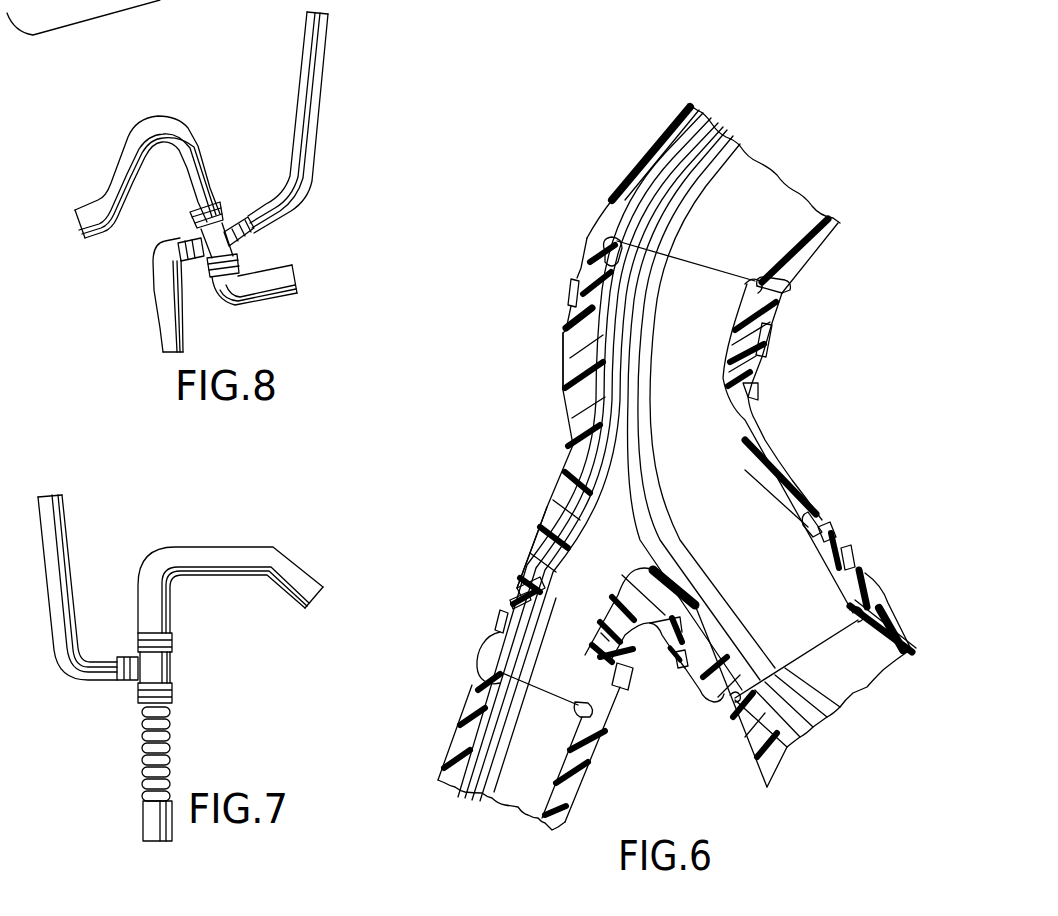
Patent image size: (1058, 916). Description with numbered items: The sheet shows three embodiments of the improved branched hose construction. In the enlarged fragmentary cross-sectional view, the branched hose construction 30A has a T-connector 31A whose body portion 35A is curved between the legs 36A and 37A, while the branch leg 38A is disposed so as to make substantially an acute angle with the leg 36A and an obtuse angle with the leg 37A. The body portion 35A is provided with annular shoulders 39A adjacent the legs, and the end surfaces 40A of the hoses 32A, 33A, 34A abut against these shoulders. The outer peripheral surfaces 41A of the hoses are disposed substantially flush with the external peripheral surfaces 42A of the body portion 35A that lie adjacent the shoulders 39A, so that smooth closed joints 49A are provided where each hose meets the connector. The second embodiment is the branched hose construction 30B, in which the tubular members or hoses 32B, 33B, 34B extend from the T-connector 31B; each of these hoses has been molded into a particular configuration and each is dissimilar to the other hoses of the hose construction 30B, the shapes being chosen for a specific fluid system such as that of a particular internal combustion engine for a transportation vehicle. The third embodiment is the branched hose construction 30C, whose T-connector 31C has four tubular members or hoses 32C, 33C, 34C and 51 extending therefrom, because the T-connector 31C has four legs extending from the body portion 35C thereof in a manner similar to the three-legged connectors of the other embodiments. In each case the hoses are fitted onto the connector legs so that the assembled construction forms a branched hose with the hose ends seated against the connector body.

In FIG. 6, the branched hose construction 30A is at (805, 358).
In FIG. 6, the T-connector 31A is at (556, 392).
In FIG. 6, the hose 32A is at (740, 758).
In FIG. 6, the hose 33A is at (457, 732).
In FIG. 6, the hose 34A is at (632, 172).
In FIG. 6, the body portion 35A is at (777, 447).
In FIG. 6, the leg 36A is at (857, 577).
In FIG. 6, the leg 37A is at (781, 300).
In FIG. 6, the branch leg 38A is at (493, 645).
In FIG. 6, the annular shoulder 39A is at (568, 323).
In FIG. 6, the end surface 40A is at (752, 394).
In FIG. 6, the outer peripheral surface 41A is at (573, 307).
In FIG. 6, the external peripheral surface 42A is at (563, 350).
In FIG. 6, the smooth closed joint 49A is at (517, 578).
In FIG. 7, the branched hose construction 30B is at (238, 520).
In FIG. 7, the T-connector 31B is at (155, 668).
In FIG. 7, the hose 32B is at (140, 737).
In FIG. 7, the hose 33B is at (309, 568).
In FIG. 7, the hose 34B is at (63, 532).
In FIG. 8, the branched hose construction 30C is at (330, 162).
In FIG. 8, the T-connector 31C is at (226, 218).
In FIG. 8, the hose 32C is at (114, 160).
In FIG. 8, the hose 33C is at (279, 302).
In FIG. 8, the hose 34C is at (320, 90).
In FIG. 8, the body portion 35C is at (172, 238).
In FIG. 8, the hose 51 is at (156, 320).